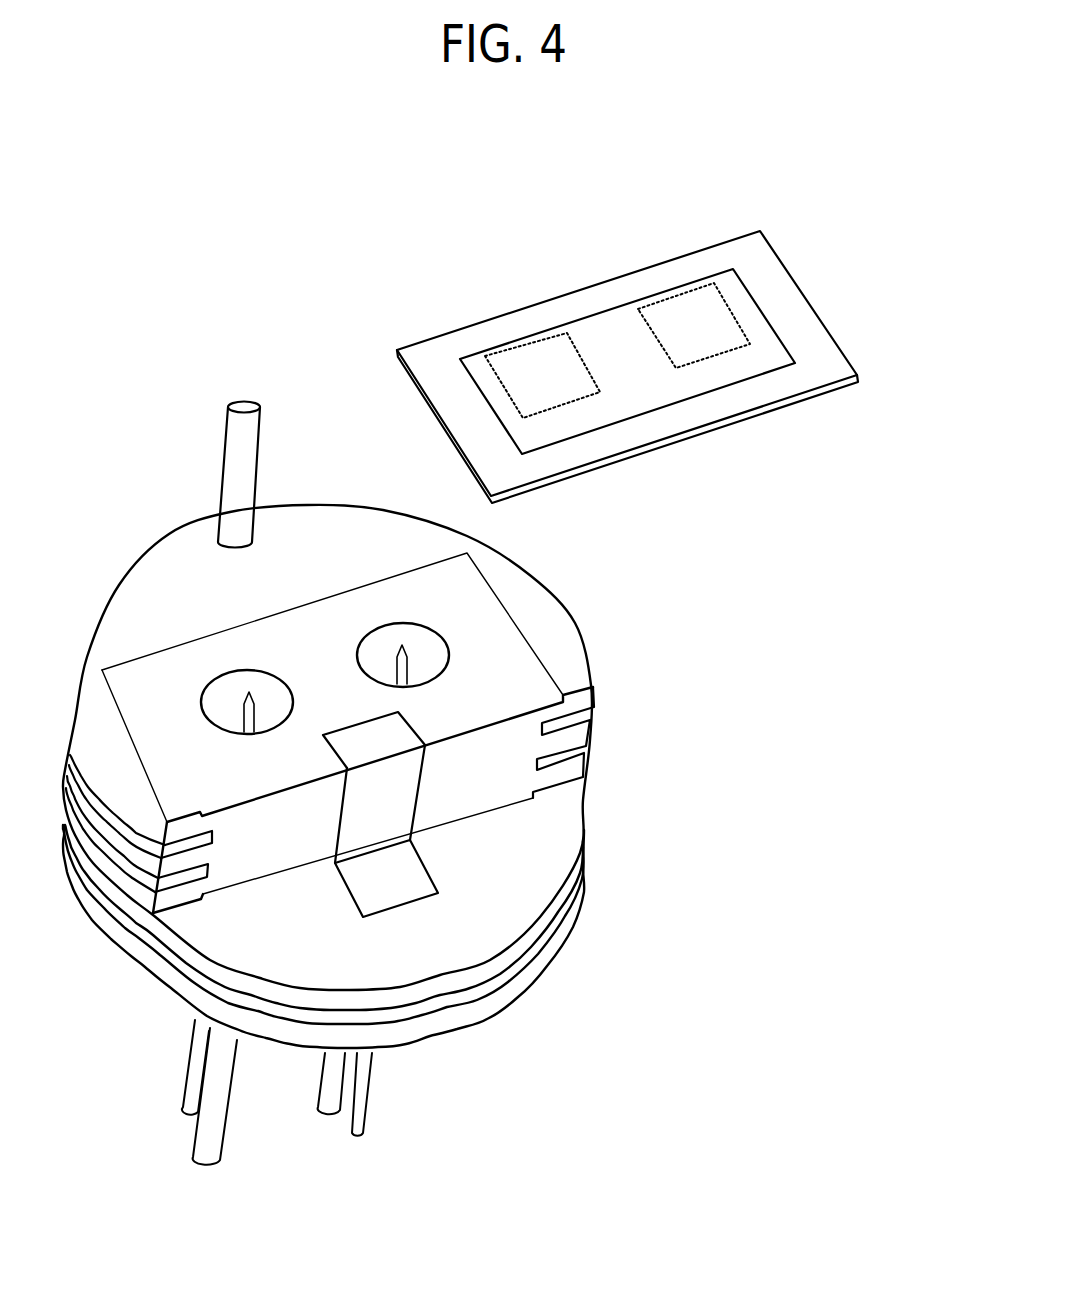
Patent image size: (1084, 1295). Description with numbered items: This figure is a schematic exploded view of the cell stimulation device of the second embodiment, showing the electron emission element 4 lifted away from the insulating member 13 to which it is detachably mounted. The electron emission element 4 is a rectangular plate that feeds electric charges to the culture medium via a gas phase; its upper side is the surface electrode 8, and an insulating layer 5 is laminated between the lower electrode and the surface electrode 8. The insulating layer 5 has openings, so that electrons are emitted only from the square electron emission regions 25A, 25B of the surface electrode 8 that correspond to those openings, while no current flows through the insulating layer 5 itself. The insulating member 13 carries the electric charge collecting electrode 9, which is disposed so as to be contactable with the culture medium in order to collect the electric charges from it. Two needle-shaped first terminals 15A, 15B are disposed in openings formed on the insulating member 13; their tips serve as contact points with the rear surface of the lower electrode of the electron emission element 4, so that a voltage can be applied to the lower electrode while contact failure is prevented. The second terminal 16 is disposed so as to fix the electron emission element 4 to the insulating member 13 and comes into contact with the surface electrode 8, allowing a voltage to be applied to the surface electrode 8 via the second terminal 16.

The electron emission element 4 is at (634, 331).
The insulating layer 5 is at (817, 357).
The surface electrode 8 is at (501, 397).
The electron emission region 25A is at (542, 378).
The electron emission region 25B is at (712, 330).
The electric charge collecting electrode 9 is at (243, 450).
The insulating member 13 is at (288, 567).
The first terminal 15A is at (243, 705).
The first terminal 15B is at (407, 658).
The second terminal 16 is at (389, 813).